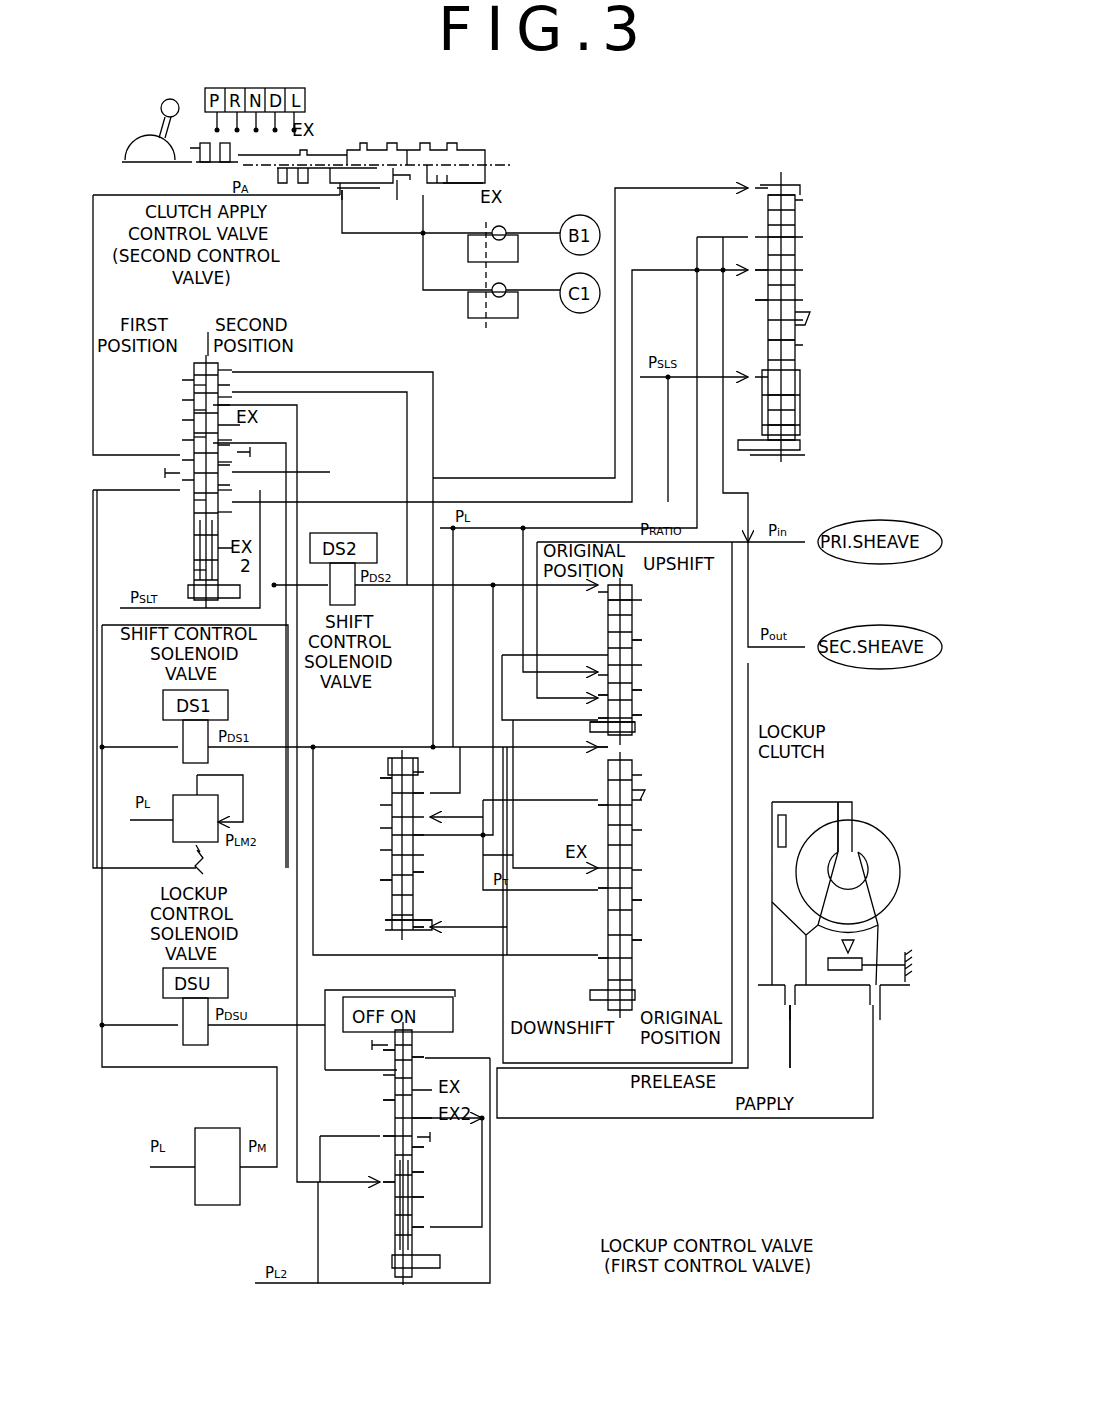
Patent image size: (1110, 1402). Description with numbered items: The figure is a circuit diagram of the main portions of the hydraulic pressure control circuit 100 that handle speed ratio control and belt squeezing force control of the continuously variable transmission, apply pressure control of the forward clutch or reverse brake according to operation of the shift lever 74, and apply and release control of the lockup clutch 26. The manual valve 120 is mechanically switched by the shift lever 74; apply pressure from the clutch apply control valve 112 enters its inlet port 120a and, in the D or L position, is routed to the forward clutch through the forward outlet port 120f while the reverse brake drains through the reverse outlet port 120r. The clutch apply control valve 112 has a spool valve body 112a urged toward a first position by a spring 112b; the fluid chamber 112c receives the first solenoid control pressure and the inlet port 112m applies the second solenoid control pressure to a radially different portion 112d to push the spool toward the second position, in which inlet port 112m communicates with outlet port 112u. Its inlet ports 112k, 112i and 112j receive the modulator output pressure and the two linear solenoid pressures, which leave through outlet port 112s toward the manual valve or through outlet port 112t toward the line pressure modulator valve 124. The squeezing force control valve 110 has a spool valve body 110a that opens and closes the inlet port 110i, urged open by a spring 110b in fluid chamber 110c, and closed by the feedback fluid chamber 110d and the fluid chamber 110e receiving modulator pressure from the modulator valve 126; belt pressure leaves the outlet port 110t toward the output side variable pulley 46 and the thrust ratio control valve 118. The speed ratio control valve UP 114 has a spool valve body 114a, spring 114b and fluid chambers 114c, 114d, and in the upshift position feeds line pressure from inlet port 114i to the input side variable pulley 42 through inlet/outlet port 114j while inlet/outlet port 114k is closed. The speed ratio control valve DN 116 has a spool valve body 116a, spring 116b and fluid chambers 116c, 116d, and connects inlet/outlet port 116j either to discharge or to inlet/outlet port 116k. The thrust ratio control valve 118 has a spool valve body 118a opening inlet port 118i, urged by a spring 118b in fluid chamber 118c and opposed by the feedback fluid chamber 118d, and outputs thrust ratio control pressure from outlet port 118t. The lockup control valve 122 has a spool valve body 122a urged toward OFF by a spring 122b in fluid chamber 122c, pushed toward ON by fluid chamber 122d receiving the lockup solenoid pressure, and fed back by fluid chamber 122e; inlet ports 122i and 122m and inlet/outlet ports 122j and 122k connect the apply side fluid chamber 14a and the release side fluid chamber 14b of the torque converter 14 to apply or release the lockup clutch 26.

The shift lever 74 is at (158, 140).
The hydraulic pressure control circuit 100 is at (546, 100).
The manual valve 120 is at (374, 130).
The inlet port 120a is at (375, 185).
The forward outlet port 120f is at (448, 185).
The reverse outlet port 120r is at (343, 192).
The clutch apply control valve 112 is at (212, 325).
The fluid chamber 112c is at (240, 372).
The radially different portion 112d is at (194, 393).
The spool valve body 112a is at (194, 420).
The outlet port 112s is at (194, 450).
The inlet port 112m is at (240, 398).
The outlet port 112u is at (240, 440).
The inlet port 112k is at (240, 462).
The inlet port 112i is at (240, 490).
The inlet port 112j is at (240, 512).
The outlet port 112t is at (185, 498).
The spring 112b is at (194, 572).
The squeezing force control valve 110 is at (802, 186).
The fluid chamber 110e is at (800, 197).
The inlet port 110i is at (758, 268).
The outlet port 110t is at (762, 292).
The feedback fluid chamber 110d is at (800, 240).
The spool valve body 110a is at (790, 338).
The fluid chamber 110c is at (785, 395).
The spring 110b is at (800, 422).
The input side variable pulley 42 is at (880, 520).
The output side variable pulley 46 is at (885, 670).
The speed ratio control valve UP 114 is at (642, 636).
The inlet port 114i is at (598, 697).
The fluid chamber 114c is at (605, 600).
The spring 114b is at (634, 642).
The inlet/outlet port 114j is at (634, 700).
The spool valve body 114a is at (634, 728).
The fluid chamber 114d is at (634, 748).
The inlet/outlet port 114k is at (598, 722).
The speed ratio control valve DN 116 is at (640, 830).
The fluid chamber 116d is at (600, 760).
The inlet/outlet port 116j is at (605, 805).
The inlet/outlet port 116k is at (600, 895).
The spool valve body 116a is at (634, 903).
The spring 116b is at (634, 958).
The fluid chamber 116c is at (605, 965).
The thrust ratio control valve 118 is at (398, 745).
The inlet port 118i is at (470, 790).
The feedback fluid chamber 118d is at (392, 795).
The spool valve body 118a is at (392, 892).
The outlet port 118t is at (455, 860).
The fluid chamber 118c is at (395, 935).
The spring 118b is at (438, 930).
The line pressure modulator No. 2 valve 124 is at (185, 810).
The modulator valve 126 is at (220, 1140).
The torque converter 14 is at (895, 815).
The lockup clutch 26 is at (788, 820).
The apply side fluid chamber 14a is at (830, 808).
The release side fluid chamber 14b is at (780, 962).
The lockup control valve 122 is at (590, 1208).
The inlet port 122m is at (430, 1052).
The fluid chamber 122d is at (380, 1050).
The inlet/outlet port 122k is at (385, 1105).
The inlet port 122i is at (390, 1142).
The fluid chamber 122c is at (392, 1190).
The inlet/outlet port 122j is at (418, 1138).
The spool valve body 122a is at (414, 1158).
The spring 122b is at (414, 1190).
The feedback fluid chamber 122e is at (414, 1232).